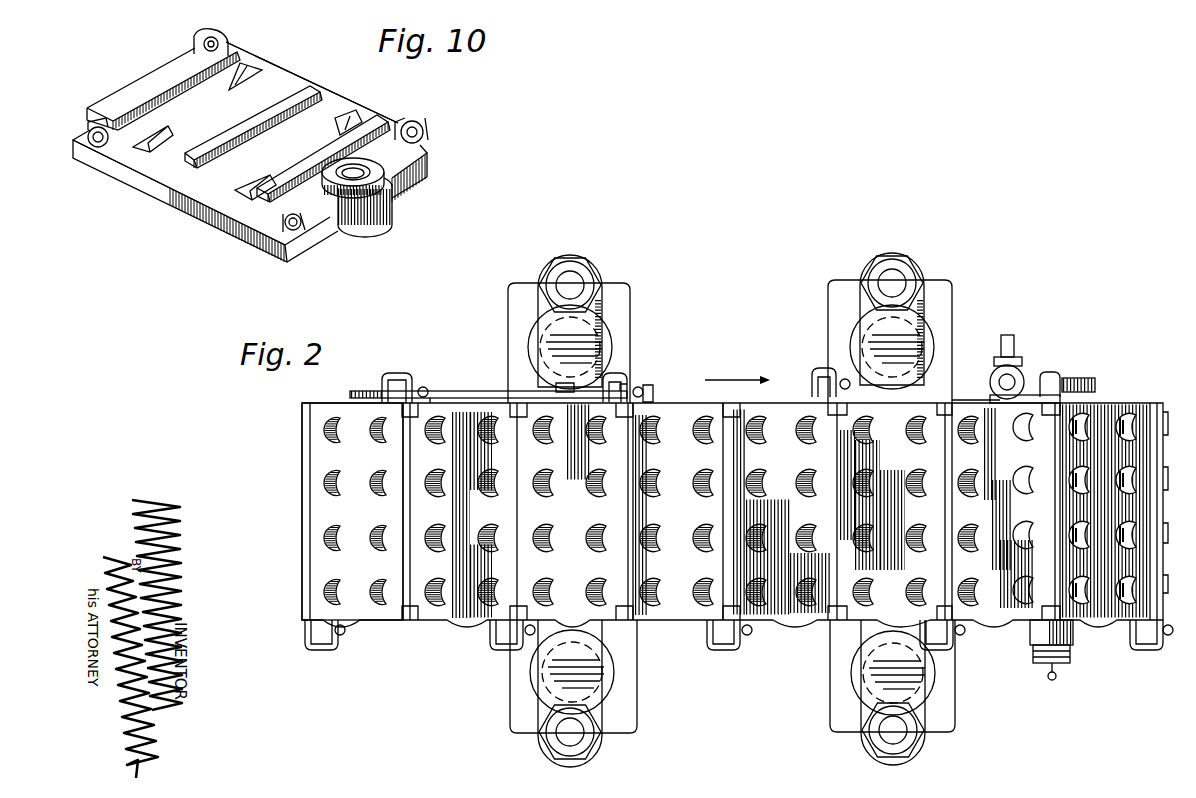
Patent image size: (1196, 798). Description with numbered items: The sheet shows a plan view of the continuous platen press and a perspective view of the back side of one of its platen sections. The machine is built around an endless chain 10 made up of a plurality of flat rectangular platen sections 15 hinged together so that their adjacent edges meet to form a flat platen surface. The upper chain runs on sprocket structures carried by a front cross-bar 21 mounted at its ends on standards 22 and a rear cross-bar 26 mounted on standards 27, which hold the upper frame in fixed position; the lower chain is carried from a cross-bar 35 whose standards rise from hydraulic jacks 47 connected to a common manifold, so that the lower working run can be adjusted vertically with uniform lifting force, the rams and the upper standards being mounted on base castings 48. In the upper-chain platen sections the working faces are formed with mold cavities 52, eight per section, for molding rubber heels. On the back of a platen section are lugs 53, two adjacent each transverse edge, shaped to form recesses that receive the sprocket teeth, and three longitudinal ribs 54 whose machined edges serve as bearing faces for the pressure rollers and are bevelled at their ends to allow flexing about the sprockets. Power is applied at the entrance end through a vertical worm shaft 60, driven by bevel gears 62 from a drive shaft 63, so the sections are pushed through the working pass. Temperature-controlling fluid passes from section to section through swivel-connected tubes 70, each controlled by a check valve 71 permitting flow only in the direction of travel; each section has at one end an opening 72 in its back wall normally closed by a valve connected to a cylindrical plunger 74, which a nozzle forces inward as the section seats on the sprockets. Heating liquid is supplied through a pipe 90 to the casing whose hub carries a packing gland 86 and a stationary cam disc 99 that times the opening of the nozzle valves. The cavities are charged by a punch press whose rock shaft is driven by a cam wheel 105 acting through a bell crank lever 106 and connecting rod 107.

In FIG. 2, the endless chain 10 is at (437, 627).
In FIG. 10, the platen section 15 is at (290, 72).
In FIG. 2, the platen section 15 is at (316, 571).
In FIG. 2, the cross-bar 21 is at (915, 385).
In FIG. 2, the standard 22 is at (886, 735).
In FIG. 2, the cross-bar 26 is at (600, 318).
In FIG. 2, the standard 27 is at (578, 283).
In FIG. 2, the cross-bar 35 is at (858, 708).
In FIG. 2, the hydraulic jack 47 is at (609, 343).
In FIG. 2, the base casting 48 is at (510, 714).
In FIG. 2, the mold cavity 52 is at (328, 485).
In FIG. 10, the lug 53 is at (243, 66).
In FIG. 10, the rib 54 is at (172, 88).
In FIG. 2, the worm shaft 60 is at (1020, 375).
In FIG. 2, the bevel gear 62 is at (988, 396).
In FIG. 2, the drive shaft 63 is at (1010, 336).
In FIG. 2, the swivel-connected tube 70 is at (652, 390).
In FIG. 2, the check valve 71 is at (641, 387).
In FIG. 10, the opening 72 is at (375, 170).
In FIG. 10, the plunger 74 is at (398, 190).
In FIG. 2, the packing gland 86 is at (1073, 652).
In FIG. 2, the pipe 90 is at (1049, 678).
In FIG. 2, the cam disc 99 is at (1020, 625).
In FIG. 2, the cam wheel 105 is at (360, 390).
In FIG. 2, the bell crank lever 106 is at (482, 392).
In FIG. 2, the connecting rod 107 is at (564, 383).